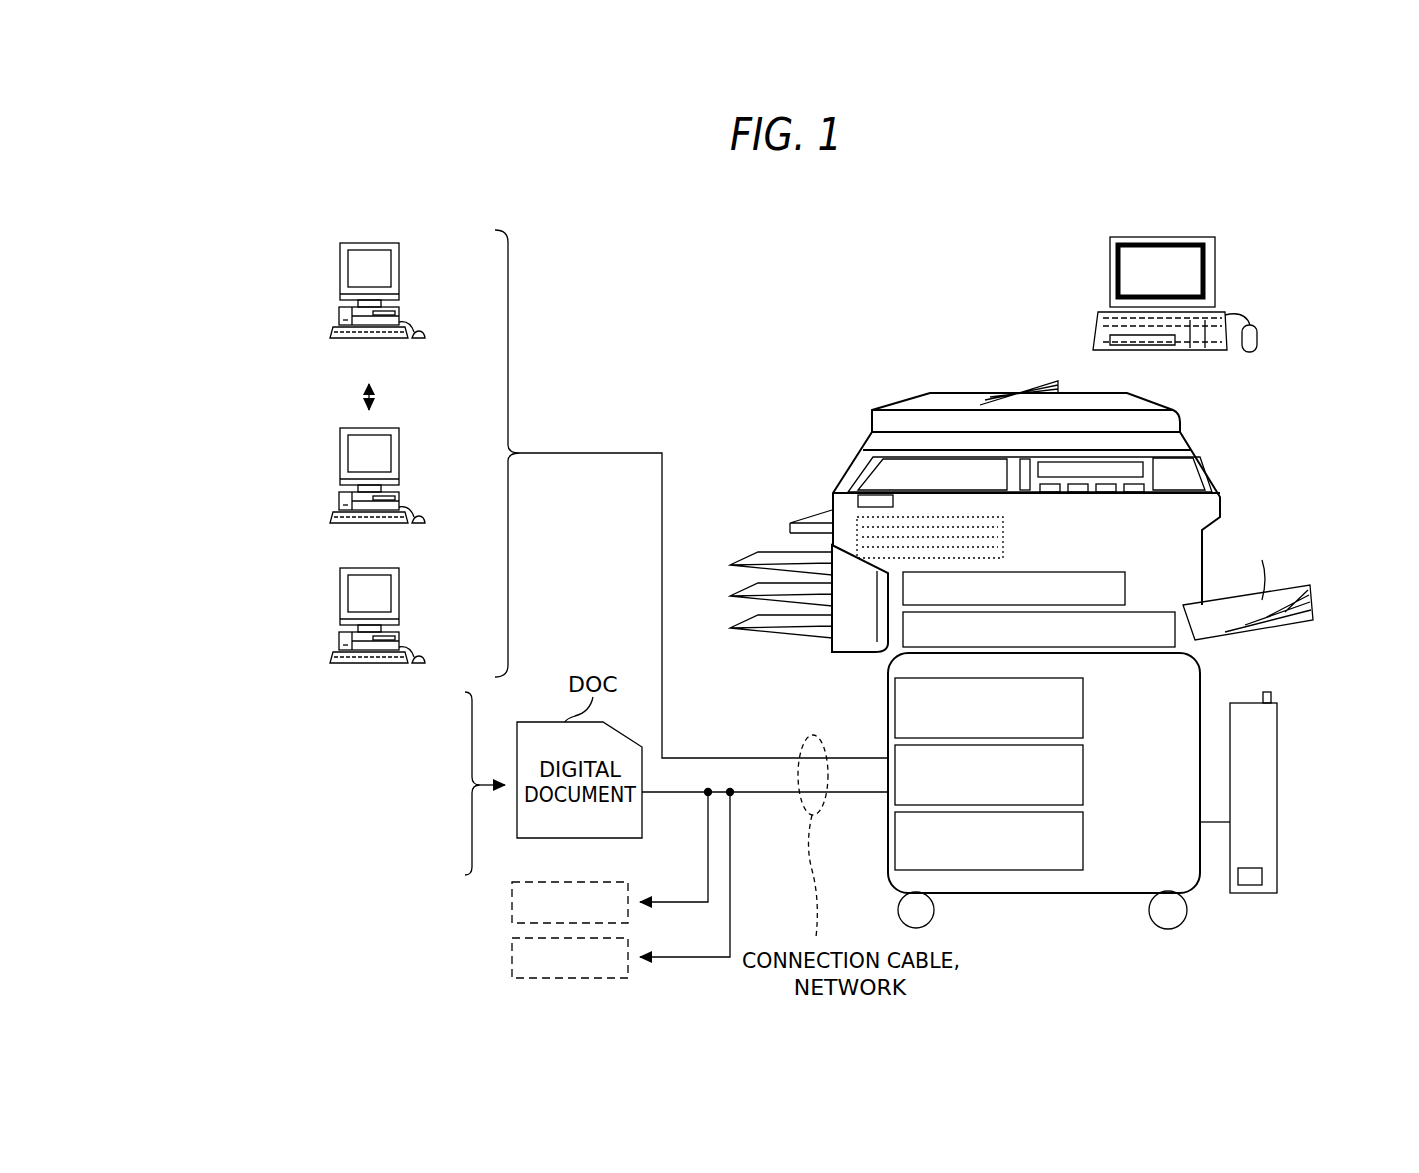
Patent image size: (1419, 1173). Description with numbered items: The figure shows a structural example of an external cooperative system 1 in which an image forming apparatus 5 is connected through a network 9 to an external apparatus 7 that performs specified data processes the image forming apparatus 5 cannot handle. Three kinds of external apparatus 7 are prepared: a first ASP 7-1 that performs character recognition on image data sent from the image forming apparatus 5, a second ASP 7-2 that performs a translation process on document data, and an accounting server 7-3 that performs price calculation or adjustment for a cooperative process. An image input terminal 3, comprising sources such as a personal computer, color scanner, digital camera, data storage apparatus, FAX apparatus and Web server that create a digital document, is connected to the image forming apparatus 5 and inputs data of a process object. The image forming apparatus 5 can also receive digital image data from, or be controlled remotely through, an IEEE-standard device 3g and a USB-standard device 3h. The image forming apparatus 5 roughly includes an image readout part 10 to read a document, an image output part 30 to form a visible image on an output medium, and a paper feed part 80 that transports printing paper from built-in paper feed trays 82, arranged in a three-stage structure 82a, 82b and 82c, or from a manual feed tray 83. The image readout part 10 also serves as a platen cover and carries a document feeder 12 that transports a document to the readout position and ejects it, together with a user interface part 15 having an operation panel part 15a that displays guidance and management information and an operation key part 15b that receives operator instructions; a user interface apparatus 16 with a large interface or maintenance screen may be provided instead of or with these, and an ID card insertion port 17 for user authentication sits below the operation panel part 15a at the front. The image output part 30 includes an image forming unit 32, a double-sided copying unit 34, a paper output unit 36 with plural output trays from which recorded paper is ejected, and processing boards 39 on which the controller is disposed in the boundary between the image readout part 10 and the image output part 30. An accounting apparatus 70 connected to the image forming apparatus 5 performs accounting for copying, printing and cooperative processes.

The external cooperative system 1 is at (682, 296).
The image input terminal 3 is at (195, 677).
The device based on IEEE 1394 standard 3g is at (512, 902).
The device based on USB 2.0 standard 3h is at (512, 957).
The image forming apparatus 5 is at (890, 368).
The external apparatus 7 is at (352, 208).
The first ASP 7-1 is at (340, 280).
The second ASP 7-2 is at (340, 465).
The accounting server 7-3 is at (340, 607).
The network 9 is at (590, 453).
The image readout part 10 is at (860, 412).
The document feeder 12 is at (948, 410).
The user interface part 15 is at (1225, 452).
The operation panel part 15a is at (876, 485).
The operation key part 15b is at (1215, 497).
The user interface apparatus 16 is at (1112, 270).
The ID card insertion port 17 is at (840, 497).
The image output part 30 is at (772, 532).
The image forming unit 32 is at (1127, 590).
The double-sided copying unit 34 is at (1190, 650).
The paper output unit 36 is at (858, 653).
The processing board 39 is at (1005, 518).
The accounting apparatus 70 is at (1278, 778).
The paper feed part 80 is at (1032, 880).
The paper feed trays 82 is at (1145, 692).
The paper feed tray 82a is at (1085, 708).
The paper feed tray 82b is at (1085, 775).
The paper feed tray 82c is at (1085, 842).
The manual feed tray 83 is at (1297, 625).